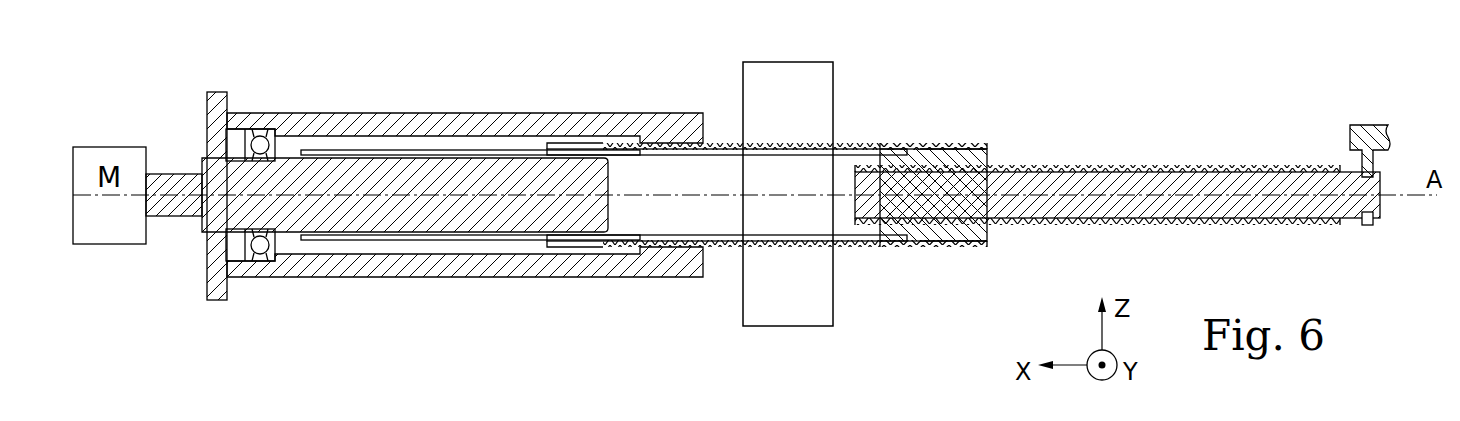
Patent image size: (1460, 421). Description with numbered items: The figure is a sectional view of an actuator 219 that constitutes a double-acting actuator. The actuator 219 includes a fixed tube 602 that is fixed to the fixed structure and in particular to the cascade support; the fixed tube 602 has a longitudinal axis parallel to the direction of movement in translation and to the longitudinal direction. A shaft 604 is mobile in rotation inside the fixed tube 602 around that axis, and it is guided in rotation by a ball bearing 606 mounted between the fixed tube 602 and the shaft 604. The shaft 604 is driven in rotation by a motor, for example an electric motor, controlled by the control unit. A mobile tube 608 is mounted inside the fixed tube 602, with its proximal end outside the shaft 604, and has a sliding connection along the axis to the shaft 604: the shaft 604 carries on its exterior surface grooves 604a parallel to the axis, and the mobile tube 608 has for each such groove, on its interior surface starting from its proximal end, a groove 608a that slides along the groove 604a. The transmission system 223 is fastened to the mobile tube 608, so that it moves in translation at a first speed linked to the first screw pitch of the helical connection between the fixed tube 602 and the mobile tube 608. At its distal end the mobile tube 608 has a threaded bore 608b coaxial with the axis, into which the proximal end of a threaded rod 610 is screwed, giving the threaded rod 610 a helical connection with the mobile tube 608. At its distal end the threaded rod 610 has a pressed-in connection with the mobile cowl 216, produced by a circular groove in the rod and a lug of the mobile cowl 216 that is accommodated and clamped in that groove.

The mobile cowl 216 is at (1352, 130).
The actuator 219 is at (1195, 71).
The transmission system 223 is at (770, 305).
The fixed tube 602 is at (405, 128).
The shaft 604 is at (348, 218).
The grooves 604a is at (473, 152).
The ball bearing 606 is at (262, 247).
The mobile tube 608 is at (940, 233).
The groove 608a is at (603, 143).
The threaded bore 608b is at (978, 150).
The threaded rod 610 is at (1133, 183).